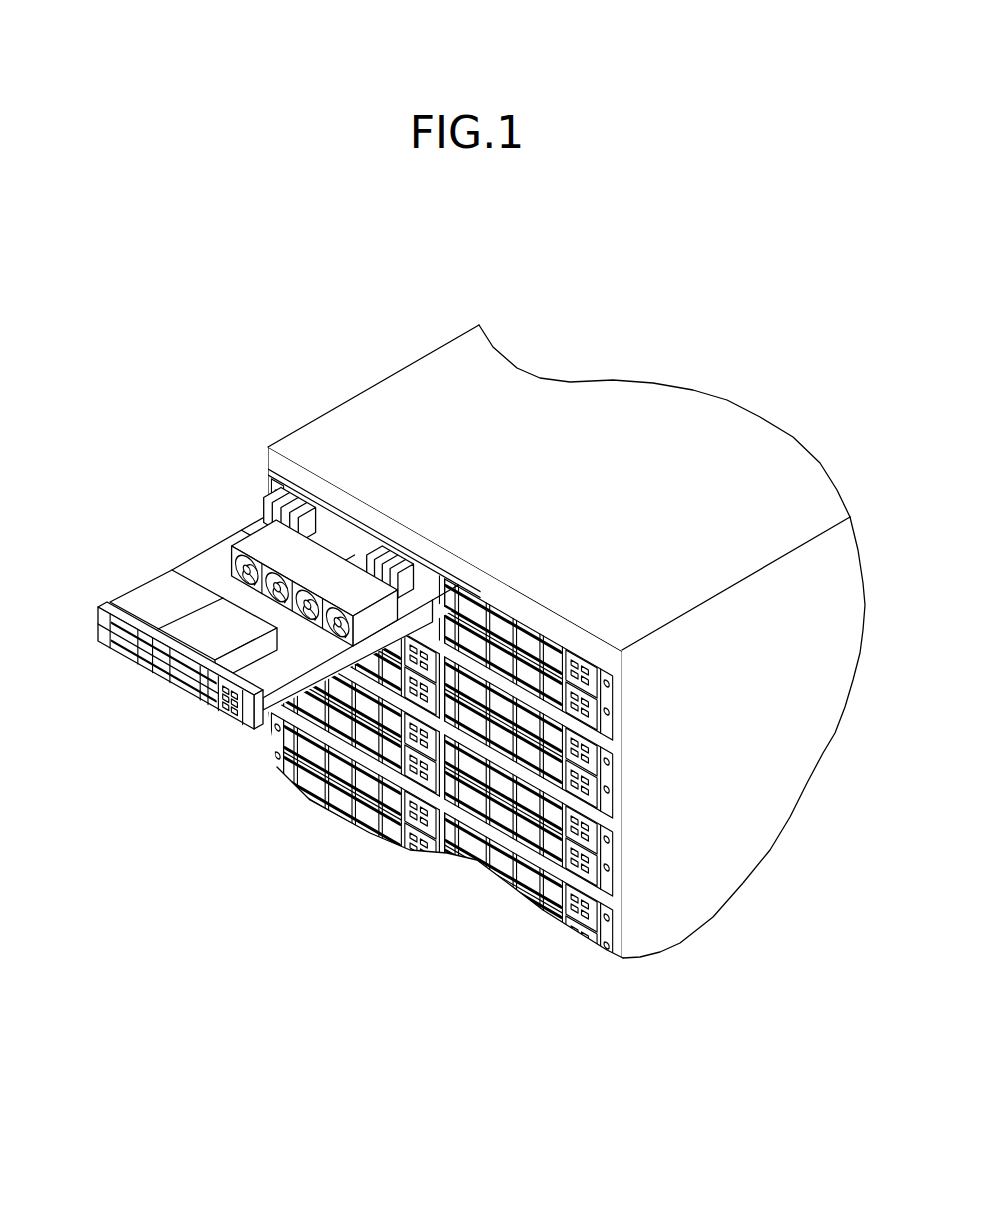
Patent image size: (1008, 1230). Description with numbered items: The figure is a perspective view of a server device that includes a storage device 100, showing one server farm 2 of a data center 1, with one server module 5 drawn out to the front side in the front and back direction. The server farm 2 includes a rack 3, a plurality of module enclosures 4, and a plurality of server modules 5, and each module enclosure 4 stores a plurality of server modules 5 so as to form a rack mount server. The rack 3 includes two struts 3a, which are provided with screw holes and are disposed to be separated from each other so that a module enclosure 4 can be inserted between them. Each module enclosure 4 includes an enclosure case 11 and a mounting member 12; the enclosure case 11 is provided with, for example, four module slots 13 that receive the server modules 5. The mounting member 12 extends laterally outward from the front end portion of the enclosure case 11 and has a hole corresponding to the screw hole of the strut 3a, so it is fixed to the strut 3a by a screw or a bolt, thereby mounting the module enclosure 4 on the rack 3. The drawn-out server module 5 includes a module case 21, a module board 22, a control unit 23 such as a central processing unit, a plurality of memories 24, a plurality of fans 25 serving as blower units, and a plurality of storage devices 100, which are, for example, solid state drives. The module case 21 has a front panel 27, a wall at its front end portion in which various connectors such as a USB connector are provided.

The data center 1 is at (190, 309).
The server farm 2 is at (294, 428).
The rack 3 is at (389, 396).
The strut 3a is at (273, 770).
The module enclosure 4 is at (323, 505).
The server module 5 is at (528, 858).
The enclosure case 11 is at (403, 527).
The mounting member 12 is at (267, 508).
The module slot 13 is at (356, 525).
The module case 21 is at (272, 720).
The module board 22 is at (222, 630).
The control unit 23 is at (378, 563).
The memory 24 is at (252, 518).
The fan 25 is at (258, 548).
The front panel 27 is at (213, 702).
The storage device 100 is at (158, 612).